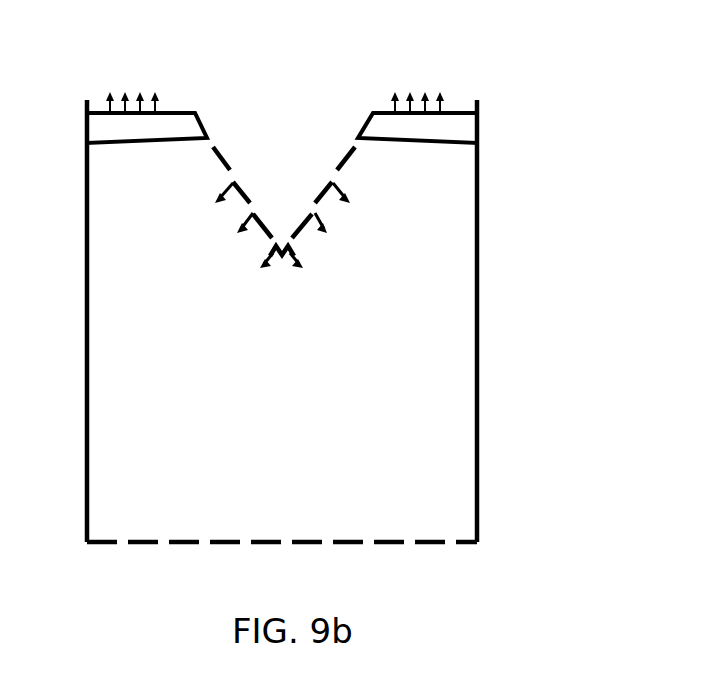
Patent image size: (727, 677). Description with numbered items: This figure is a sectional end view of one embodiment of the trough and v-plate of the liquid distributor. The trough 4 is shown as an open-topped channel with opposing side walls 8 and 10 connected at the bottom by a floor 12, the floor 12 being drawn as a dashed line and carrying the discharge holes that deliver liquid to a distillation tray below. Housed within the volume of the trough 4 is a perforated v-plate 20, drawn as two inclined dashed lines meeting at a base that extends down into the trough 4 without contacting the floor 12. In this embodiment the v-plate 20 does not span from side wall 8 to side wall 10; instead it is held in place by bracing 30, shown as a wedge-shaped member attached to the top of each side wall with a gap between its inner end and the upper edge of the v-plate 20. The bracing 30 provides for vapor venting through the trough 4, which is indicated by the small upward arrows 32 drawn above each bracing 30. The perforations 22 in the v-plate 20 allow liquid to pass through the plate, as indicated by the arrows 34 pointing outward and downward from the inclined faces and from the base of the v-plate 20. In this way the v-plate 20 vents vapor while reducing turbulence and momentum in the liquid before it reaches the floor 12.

The trough 4 is at (321, 348).
The side wall 8 is at (470, 406).
The side wall 10 is at (87, 427).
The floor 12 is at (424, 552).
The v-plate 20 is at (222, 155).
The perforations 22 is at (357, 147).
The bracing 30 is at (455, 112).
The arrows 32 is at (155, 97).
The arrows 34 is at (327, 228).